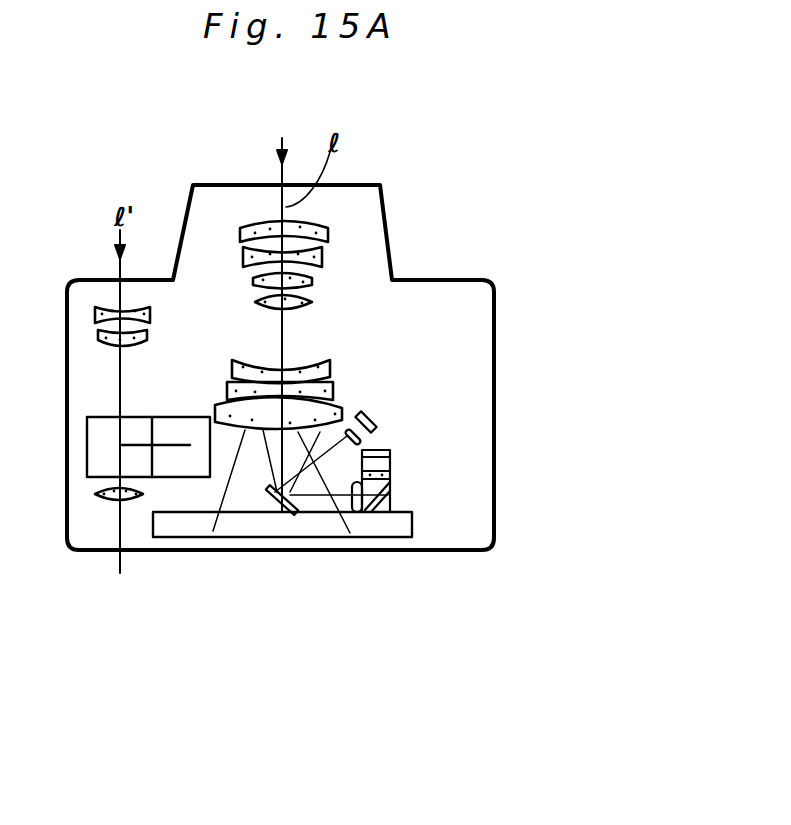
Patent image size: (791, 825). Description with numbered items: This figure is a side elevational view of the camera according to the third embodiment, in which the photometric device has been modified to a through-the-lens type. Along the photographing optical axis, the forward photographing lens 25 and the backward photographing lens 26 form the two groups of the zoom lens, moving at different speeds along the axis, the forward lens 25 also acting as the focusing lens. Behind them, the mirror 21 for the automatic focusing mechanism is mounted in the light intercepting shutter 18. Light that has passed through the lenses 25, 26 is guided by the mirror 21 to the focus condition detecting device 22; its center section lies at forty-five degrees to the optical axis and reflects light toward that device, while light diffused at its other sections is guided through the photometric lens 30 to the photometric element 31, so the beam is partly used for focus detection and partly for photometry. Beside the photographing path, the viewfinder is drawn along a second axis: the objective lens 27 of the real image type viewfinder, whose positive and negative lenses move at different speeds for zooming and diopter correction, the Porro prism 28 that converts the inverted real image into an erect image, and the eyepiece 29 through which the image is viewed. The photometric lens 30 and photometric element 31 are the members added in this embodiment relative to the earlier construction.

The light intercepting shutter 18 is at (244, 522).
The mirror 21 is at (268, 488).
The focus condition detecting device 22 is at (397, 473).
The forward photographing lens 25 is at (332, 225).
The backward photographing lens 26 is at (347, 420).
The objective lens 27 is at (153, 300).
The Porro prism 28 is at (135, 430).
The eyepiece 29 is at (98, 502).
The photometric lens 30 is at (372, 433).
The photometric element 31 is at (372, 412).